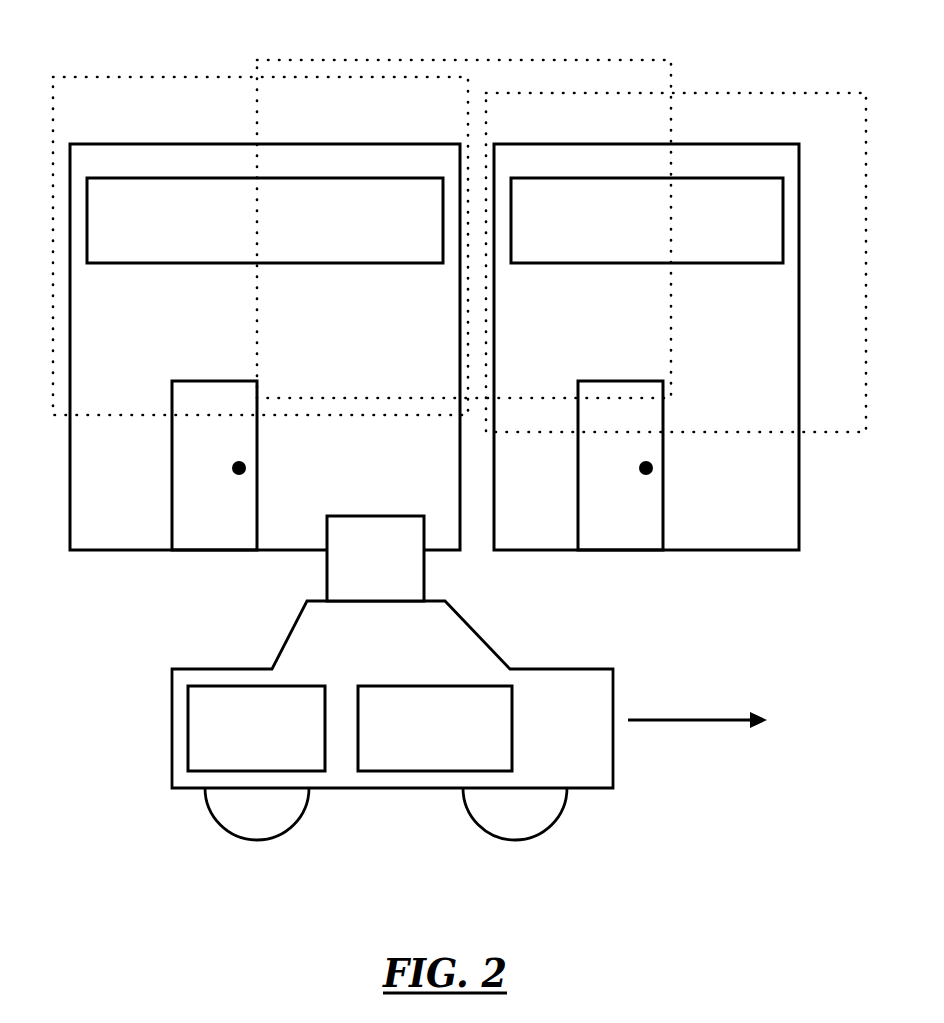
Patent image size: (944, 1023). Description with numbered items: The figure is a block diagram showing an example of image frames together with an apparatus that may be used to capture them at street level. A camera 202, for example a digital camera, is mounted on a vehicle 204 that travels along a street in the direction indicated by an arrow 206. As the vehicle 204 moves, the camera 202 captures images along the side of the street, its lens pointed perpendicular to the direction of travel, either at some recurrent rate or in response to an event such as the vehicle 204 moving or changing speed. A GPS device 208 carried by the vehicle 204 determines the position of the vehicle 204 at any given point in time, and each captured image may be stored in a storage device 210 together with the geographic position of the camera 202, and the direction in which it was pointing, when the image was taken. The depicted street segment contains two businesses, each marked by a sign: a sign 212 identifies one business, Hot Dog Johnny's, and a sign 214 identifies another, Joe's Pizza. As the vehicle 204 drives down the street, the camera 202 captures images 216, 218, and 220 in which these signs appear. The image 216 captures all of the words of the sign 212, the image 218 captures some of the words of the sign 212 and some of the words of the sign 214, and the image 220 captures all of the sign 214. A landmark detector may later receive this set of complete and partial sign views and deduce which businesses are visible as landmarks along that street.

The camera 202 is at (375, 558).
The vehicle 204 is at (510, 653).
The arrow 206 is at (680, 703).
The GPS device 208 is at (256, 728).
The storage device 210 is at (435, 728).
The sign 212 is at (306, 263).
The sign 214 is at (560, 263).
The image 216 is at (103, 77).
The image 218 is at (392, 60).
The image 220 is at (714, 93).